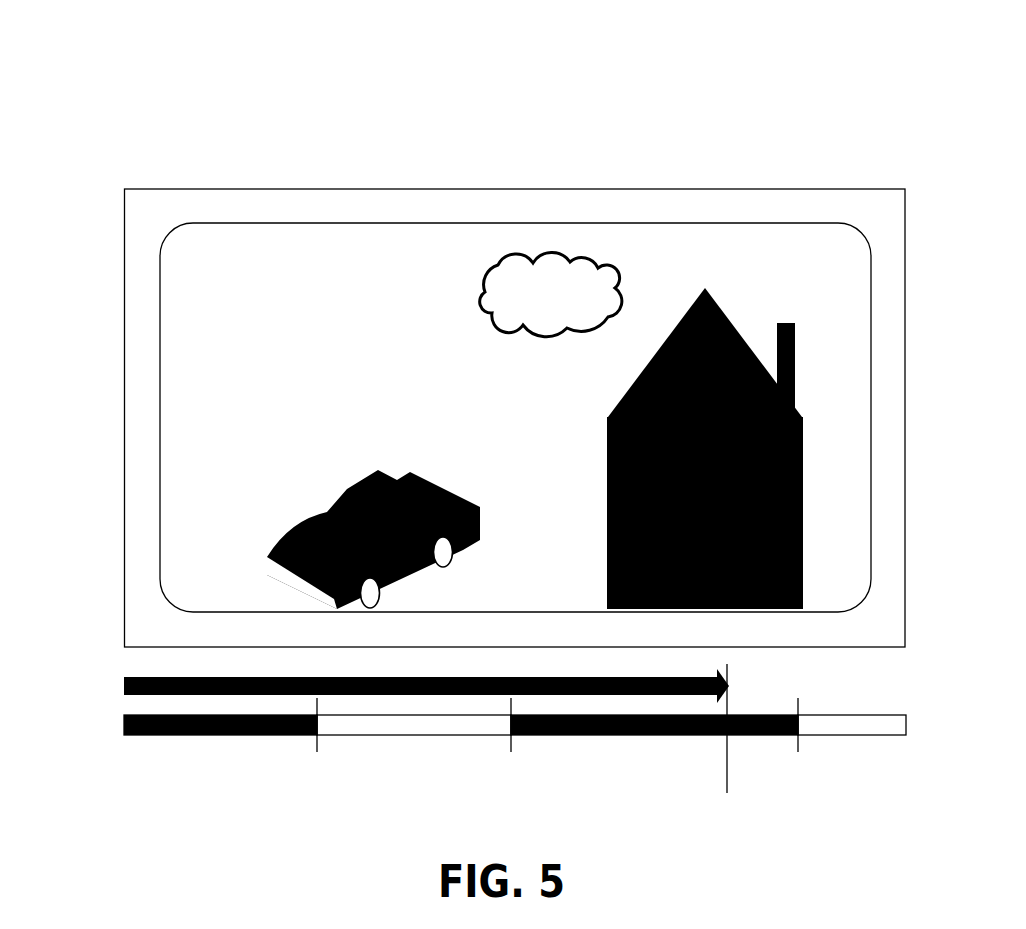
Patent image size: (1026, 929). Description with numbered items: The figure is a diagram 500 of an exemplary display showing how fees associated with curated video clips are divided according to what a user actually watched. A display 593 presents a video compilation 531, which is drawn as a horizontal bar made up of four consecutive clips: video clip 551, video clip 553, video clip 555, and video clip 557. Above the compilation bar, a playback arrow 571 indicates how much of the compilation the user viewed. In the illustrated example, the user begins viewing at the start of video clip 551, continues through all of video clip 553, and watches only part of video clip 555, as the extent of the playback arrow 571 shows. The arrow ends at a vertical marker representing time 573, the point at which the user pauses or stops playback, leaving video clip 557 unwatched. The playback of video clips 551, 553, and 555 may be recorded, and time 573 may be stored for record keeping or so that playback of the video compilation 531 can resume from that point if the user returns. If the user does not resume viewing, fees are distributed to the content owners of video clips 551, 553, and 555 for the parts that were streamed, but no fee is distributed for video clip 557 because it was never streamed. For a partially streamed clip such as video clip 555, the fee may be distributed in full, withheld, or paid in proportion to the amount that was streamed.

The diagram 500 is at (124, 66).
The display 593 is at (749, 188).
The playback arrow 571 is at (124, 682).
The video compilation 531 is at (124, 724).
The video clip 551 is at (218, 736).
The video clip 553 is at (402, 727).
The video clip 555 is at (658, 736).
The video clip 557 is at (852, 730).
The time 573 is at (727, 777).